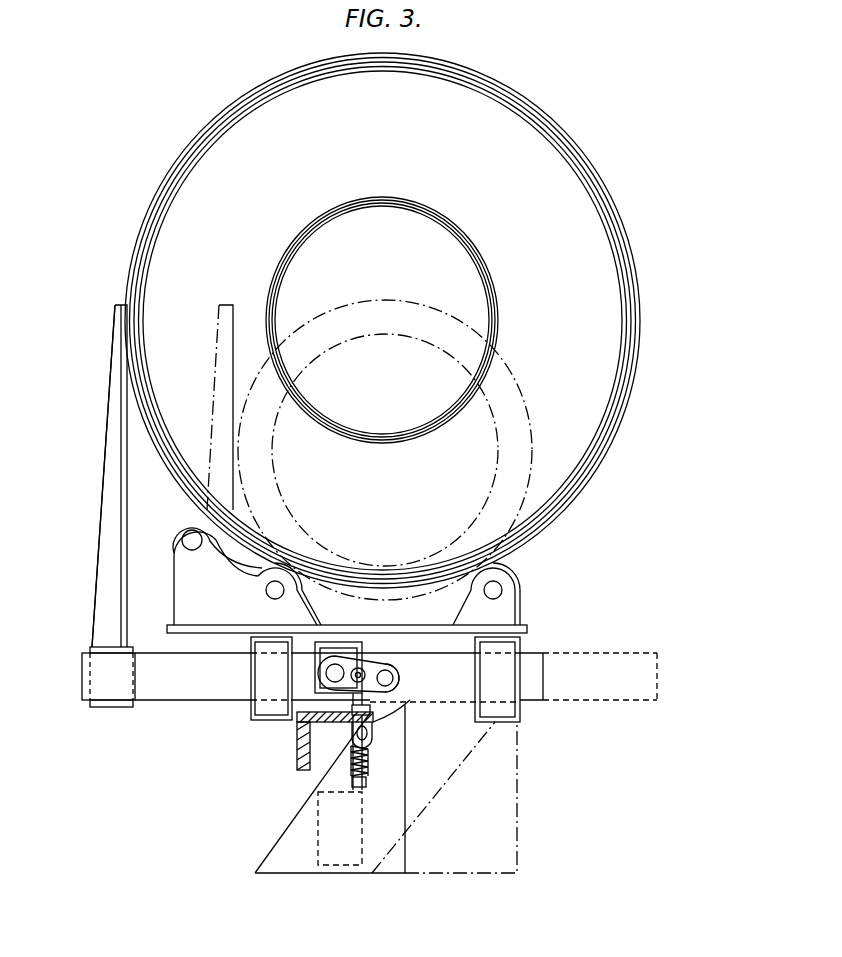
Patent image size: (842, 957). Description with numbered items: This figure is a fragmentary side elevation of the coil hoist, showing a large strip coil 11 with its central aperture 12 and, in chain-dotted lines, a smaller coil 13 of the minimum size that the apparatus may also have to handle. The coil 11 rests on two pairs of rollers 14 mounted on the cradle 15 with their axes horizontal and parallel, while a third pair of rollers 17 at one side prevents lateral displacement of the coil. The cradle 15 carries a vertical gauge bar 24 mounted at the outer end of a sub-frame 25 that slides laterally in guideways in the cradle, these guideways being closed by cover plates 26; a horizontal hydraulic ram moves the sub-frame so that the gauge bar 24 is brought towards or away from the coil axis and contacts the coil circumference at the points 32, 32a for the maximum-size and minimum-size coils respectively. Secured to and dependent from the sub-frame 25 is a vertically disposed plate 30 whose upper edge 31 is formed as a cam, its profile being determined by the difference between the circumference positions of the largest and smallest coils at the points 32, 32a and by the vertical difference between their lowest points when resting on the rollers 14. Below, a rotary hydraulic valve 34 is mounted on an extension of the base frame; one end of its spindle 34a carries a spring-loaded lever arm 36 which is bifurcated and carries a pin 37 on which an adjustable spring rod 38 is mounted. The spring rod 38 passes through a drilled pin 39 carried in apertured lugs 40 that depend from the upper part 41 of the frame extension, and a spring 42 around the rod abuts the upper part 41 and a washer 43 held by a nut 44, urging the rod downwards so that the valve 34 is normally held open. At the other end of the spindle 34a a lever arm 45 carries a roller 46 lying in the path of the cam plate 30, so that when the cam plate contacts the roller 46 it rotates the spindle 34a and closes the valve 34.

The coil 11 is at (237, 98).
The aperture 12 is at (452, 224).
The smaller coil 13 is at (517, 367).
The rollers 14 is at (272, 565).
The cradle 15 is at (518, 628).
The third pair of rollers 17 is at (170, 537).
The vertical gauge bar 24 is at (107, 482).
The sub-frame 25 is at (180, 680).
The cover plates 26 is at (260, 690).
The plate 30 is at (295, 862).
The upper edge 31 is at (288, 828).
The point 32 is at (128, 316).
The point 32a is at (237, 393).
The rotary hydraulic valve 34 is at (331, 664).
The spindle 34a is at (341, 668).
The spring-loaded lever arm 36 is at (348, 662).
The pin 37 is at (364, 674).
The adjustable spring rod 38 is at (353, 790).
The drilled pin 39 is at (373, 735).
The apertured lugs 40 is at (350, 731).
The upper part 41 is at (369, 716).
The spring 42 is at (352, 757).
The washer 43 is at (353, 777).
The nut 44 is at (368, 780).
The lever arm 45 is at (394, 678).
The roller 46 is at (383, 674).